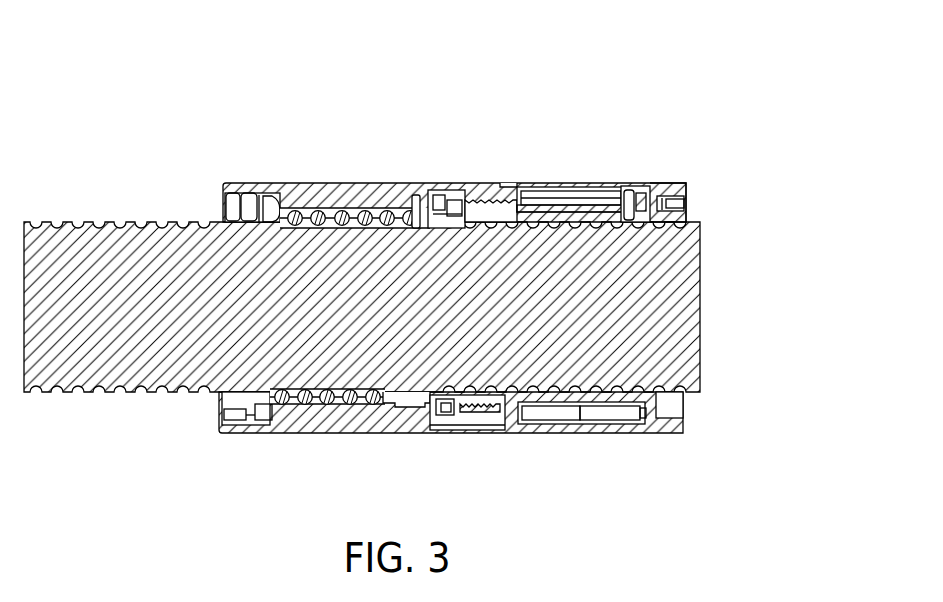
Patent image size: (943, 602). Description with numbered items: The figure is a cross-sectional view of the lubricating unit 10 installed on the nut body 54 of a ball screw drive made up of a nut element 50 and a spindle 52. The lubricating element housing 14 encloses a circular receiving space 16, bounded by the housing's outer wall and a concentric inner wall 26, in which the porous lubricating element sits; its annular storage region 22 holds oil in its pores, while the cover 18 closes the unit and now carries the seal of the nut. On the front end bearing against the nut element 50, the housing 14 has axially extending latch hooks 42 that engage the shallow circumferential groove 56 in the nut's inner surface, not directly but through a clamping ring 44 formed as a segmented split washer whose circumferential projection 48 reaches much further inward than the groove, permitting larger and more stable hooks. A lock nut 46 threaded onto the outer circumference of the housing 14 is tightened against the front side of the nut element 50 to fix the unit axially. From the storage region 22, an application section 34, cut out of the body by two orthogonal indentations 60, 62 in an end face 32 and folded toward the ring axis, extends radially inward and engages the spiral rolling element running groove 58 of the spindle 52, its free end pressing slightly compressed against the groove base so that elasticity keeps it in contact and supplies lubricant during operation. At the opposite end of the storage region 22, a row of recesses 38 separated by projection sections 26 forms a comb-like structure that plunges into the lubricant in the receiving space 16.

The lubricating unit 10 is at (690, 122).
The lubricating element housing 14 is at (552, 187).
The receiving space 16 is at (636, 428).
The cover 18 is at (686, 186).
The storage region 22 is at (615, 416).
The inner wall / projection section 26 is at (577, 407).
The end face 32 is at (583, 204).
The application section 34 is at (652, 217).
The recesses 38 is at (537, 413).
The latch hooks 42 is at (438, 192).
The clamping ring 44 is at (444, 192).
The lock nut 46 is at (492, 187).
The projection 48 is at (456, 190).
The nut element 50 is at (283, 188).
The spindle 52 is at (700, 312).
The nut body 54 is at (330, 433).
The circumferential groove 56 is at (430, 433).
The rolling element running groove 58 is at (505, 395).
The indentation 60 is at (565, 200).
The indentation 62 is at (631, 187).